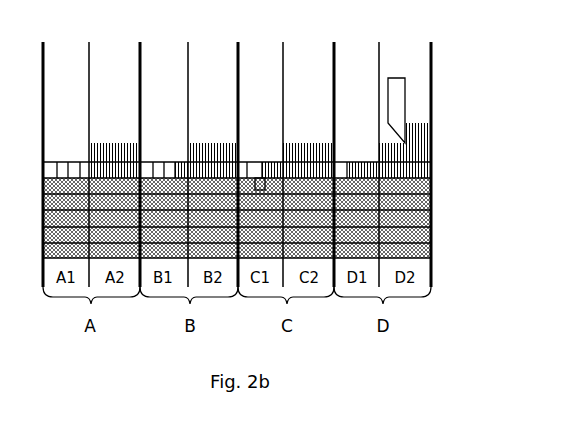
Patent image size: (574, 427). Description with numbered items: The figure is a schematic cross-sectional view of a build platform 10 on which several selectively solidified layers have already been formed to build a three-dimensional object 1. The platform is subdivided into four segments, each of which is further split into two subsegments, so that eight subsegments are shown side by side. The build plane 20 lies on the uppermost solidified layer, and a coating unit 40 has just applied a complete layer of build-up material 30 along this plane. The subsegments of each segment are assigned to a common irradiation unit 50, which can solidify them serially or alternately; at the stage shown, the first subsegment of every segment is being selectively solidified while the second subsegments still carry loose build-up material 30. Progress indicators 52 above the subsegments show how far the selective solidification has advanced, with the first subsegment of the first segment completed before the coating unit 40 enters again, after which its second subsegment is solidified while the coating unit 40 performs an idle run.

The build platform 10 is at (325, 262).
The three-dimensional object 1 is at (259, 186).
The build plane 20 is at (355, 173).
The build-up material 30 is at (117, 140).
The coating unit 40 is at (396, 100).
The irradiation unit 50 is at (262, 125).
The progress indicator 52 is at (161, 156).